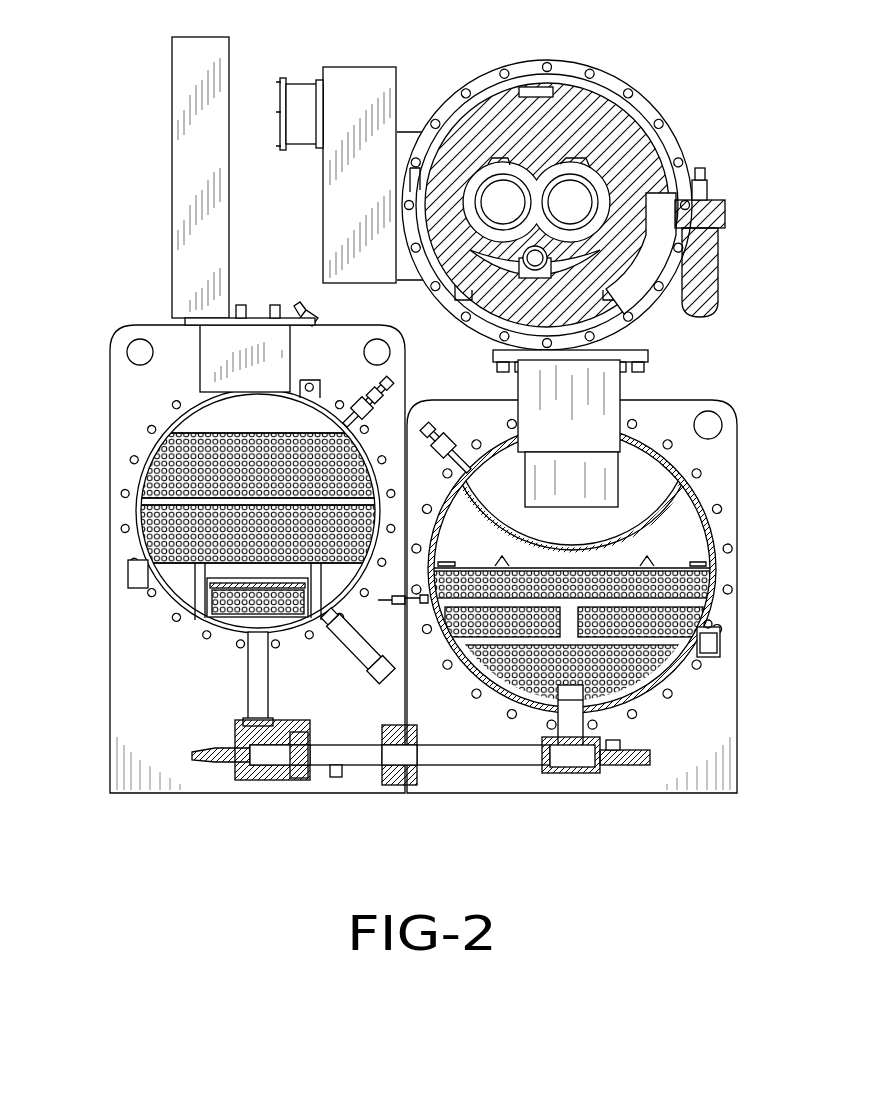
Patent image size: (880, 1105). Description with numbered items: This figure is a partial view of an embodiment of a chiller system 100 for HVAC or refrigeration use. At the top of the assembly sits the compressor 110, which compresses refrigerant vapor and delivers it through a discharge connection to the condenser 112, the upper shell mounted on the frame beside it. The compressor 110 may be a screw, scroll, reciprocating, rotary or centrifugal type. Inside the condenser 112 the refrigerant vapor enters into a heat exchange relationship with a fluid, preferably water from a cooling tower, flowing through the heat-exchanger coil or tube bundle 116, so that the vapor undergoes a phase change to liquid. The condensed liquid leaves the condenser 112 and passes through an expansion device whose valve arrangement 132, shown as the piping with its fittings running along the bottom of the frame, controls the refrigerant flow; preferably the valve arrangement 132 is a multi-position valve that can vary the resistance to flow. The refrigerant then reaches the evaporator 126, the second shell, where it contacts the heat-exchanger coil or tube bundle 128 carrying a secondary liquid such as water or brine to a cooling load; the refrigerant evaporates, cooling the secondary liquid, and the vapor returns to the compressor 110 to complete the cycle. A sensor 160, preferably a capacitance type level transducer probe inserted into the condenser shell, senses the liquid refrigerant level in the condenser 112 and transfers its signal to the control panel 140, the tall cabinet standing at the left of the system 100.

The chiller system 100 is at (90, 240).
The compressor 110 is at (580, 143).
The condenser 112 is at (226, 485).
The heat-exchanger coil or tube bundle 116 is at (177, 468).
The evaporator 126 is at (606, 569).
The heat-exchanger coil or tube bundle 128 is at (683, 623).
The valve arrangement 132 is at (398, 755).
The control panel 140 is at (193, 85).
The sensor 160 is at (355, 637).